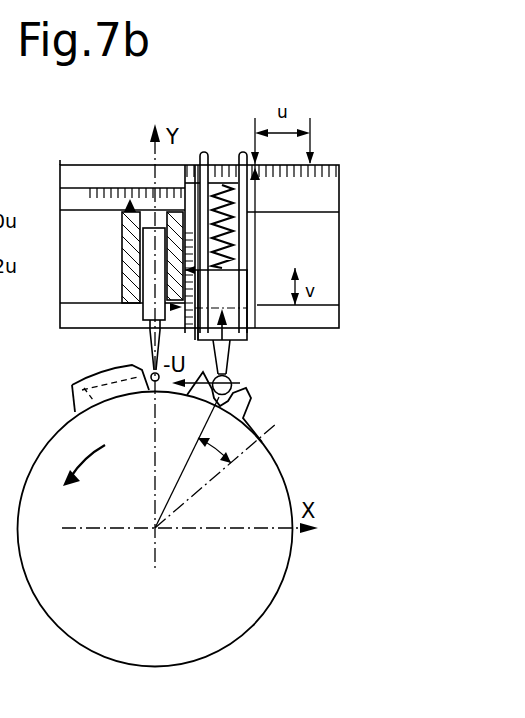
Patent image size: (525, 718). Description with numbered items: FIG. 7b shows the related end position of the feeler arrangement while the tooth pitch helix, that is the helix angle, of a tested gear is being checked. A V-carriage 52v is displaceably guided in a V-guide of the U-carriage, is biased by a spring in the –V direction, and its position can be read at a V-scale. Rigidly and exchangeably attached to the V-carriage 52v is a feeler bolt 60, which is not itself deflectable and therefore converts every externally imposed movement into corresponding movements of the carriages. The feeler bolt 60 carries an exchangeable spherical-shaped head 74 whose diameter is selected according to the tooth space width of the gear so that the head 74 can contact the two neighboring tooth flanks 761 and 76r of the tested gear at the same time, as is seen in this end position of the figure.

The V-carriage 52v is at (232, 343).
The feeler bolt 60 is at (229, 360).
The spherical-shaped head 74 is at (234, 396).
The tooth flank 76r is at (203, 374).
The tooth flank 761 is at (227, 439).